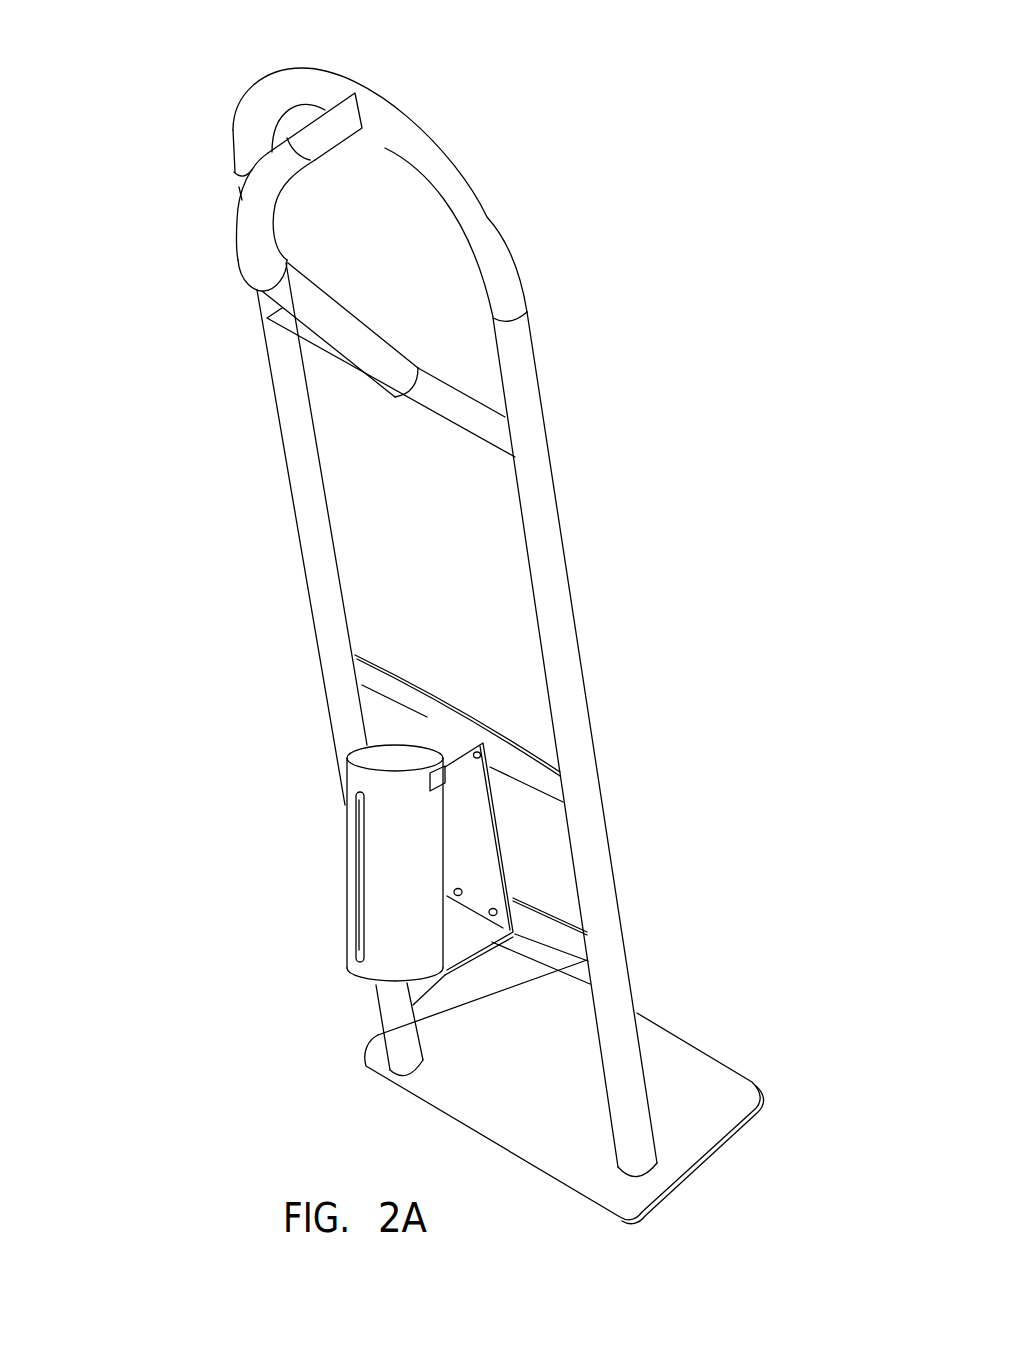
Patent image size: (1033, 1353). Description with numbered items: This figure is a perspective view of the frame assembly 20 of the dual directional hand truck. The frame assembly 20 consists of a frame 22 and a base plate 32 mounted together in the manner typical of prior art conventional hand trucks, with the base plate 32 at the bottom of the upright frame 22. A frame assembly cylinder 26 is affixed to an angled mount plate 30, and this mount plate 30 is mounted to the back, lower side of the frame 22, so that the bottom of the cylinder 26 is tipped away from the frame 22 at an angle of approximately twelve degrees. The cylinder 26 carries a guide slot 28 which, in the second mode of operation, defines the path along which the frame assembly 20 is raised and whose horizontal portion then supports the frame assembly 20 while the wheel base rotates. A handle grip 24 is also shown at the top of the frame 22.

The frame assembly 20 is at (507, 108).
The frame 22 is at (543, 522).
The handle grip 24 is at (247, 250).
The frame assembly cylinder 26 is at (425, 817).
The guide slot 28 is at (363, 882).
The angled mount plate 30 is at (478, 852).
The base plate 32 is at (713, 1083).